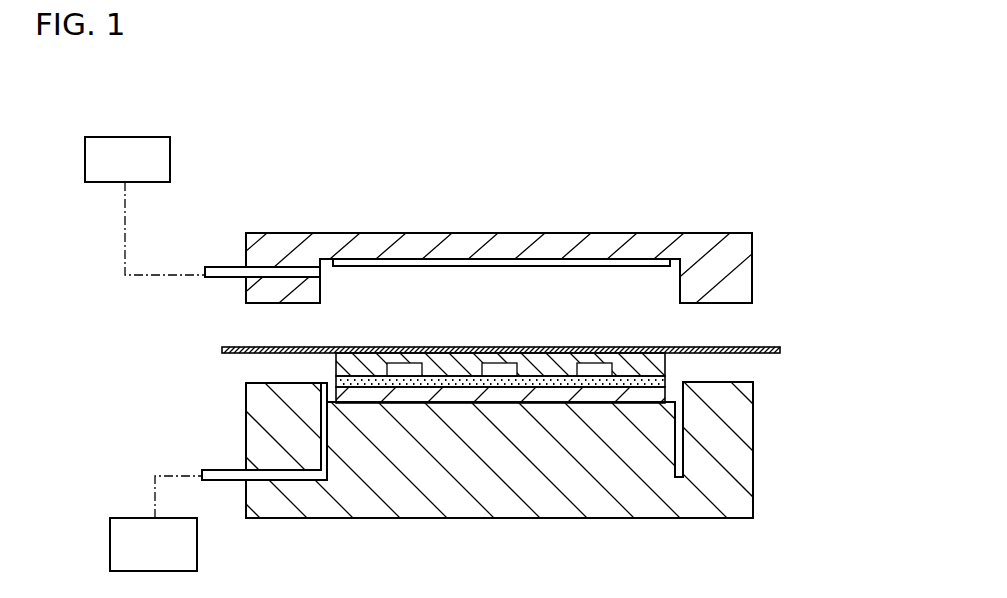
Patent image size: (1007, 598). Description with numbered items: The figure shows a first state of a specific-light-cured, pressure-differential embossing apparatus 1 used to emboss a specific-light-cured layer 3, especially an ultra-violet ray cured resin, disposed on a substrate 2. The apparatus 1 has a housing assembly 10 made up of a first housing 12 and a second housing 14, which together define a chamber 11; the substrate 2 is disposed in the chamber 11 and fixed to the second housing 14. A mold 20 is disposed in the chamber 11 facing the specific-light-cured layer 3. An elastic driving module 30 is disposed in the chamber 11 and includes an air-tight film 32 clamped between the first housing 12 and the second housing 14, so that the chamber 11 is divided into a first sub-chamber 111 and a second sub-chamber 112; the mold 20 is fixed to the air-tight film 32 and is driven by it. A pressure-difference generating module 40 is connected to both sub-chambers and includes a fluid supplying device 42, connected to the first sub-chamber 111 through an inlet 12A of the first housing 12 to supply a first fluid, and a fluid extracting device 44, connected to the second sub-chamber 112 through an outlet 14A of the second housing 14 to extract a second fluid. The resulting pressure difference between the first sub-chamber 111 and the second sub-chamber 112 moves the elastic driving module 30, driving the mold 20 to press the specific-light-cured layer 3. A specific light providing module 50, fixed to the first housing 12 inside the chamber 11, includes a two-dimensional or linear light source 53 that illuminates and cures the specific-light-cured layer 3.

The pressure-differential embossing apparatus 1 is at (512, 195).
The substrate 2 is at (655, 398).
The specific-light-cured layer 3 is at (666, 378).
The housing assembly 10 is at (250, 46).
The chamber 11 is at (350, 46).
The first housing 12 is at (246, 246).
The inlet 12A is at (205, 273).
The second housing 14 is at (250, 404).
The outlet 14A is at (217, 479).
The mold 20 is at (350, 366).
The elastic driving module 30 is at (222, 347).
The air-tight film 32 is at (452, 333).
The pressure-difference generating module 40 is at (700, 45).
The fluid supplying device 42 is at (98, 181).
The fluid extracting device 44 is at (125, 527).
The specific light providing module 50 is at (509, 219).
The two-dimensional light source or linear light source 53 is at (509, 219).
The first sub-chamber 111 is at (407, 282).
The second sub-chamber 112 is at (327, 392).